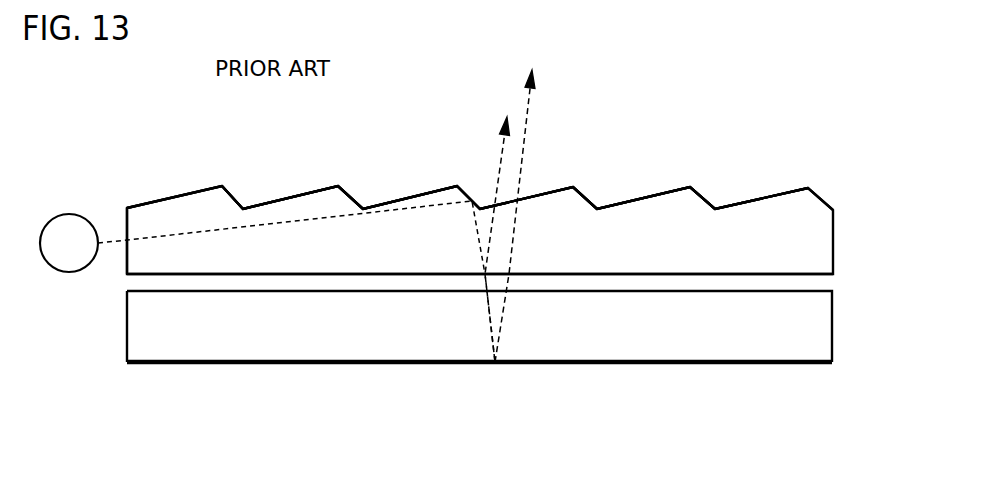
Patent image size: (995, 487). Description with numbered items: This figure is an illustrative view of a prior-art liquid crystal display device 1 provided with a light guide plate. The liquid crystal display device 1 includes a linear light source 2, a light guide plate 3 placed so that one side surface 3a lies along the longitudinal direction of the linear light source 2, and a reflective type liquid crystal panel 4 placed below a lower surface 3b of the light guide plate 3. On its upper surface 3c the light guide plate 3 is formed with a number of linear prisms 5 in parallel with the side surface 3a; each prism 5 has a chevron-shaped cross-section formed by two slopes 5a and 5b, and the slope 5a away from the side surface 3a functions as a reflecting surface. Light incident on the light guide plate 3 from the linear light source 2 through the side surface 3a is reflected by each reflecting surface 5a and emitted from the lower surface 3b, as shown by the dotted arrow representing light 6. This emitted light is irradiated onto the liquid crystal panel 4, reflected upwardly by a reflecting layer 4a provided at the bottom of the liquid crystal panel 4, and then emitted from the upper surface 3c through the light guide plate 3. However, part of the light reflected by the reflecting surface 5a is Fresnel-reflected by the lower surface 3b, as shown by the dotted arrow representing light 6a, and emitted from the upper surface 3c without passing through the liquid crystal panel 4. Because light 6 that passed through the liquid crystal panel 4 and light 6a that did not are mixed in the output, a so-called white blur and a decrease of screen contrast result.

The liquid crystal display device 1 is at (461, 67).
The linear light source 2 is at (68, 222).
The light guide plate 3 is at (172, 183).
The side surface 3a is at (127, 257).
The lower surface 3b is at (808, 275).
The upper surface 3c is at (266, 182).
The reflective type liquid crystal panel 4 is at (824, 326).
The reflecting layer 4a is at (808, 365).
The linear prism 5 is at (344, 177).
The slope 5a is at (349, 196).
The slope 5b is at (303, 194).
The light 6 is at (530, 98).
The light 6a is at (503, 125).